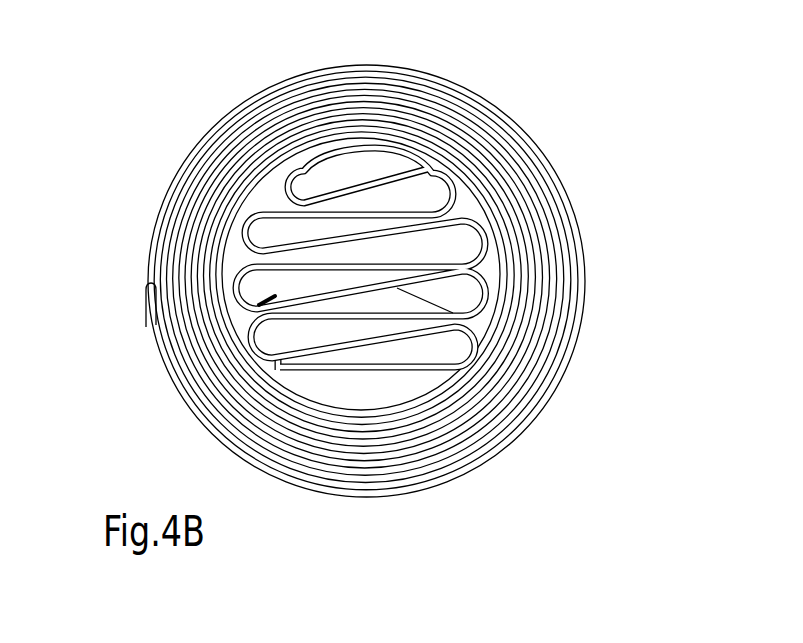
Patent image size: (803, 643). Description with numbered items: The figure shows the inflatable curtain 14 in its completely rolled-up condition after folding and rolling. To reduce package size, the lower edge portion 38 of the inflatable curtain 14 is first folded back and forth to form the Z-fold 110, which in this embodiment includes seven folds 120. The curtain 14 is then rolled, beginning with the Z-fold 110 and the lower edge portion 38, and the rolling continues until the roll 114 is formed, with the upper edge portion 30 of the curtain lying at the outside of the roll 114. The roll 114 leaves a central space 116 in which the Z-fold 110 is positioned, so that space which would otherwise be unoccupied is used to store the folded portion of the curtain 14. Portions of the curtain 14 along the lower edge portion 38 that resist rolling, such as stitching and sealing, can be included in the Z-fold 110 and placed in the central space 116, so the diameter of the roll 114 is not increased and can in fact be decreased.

The inflatable curtain 14 is at (146, 153).
The roll 114 is at (216, 113).
The folds 120 is at (236, 283).
The upper edge portion 30 is at (146, 288).
The Z-fold 110 is at (493, 328).
The central space 116 is at (263, 302).
The lower edge portion 38 is at (342, 366).